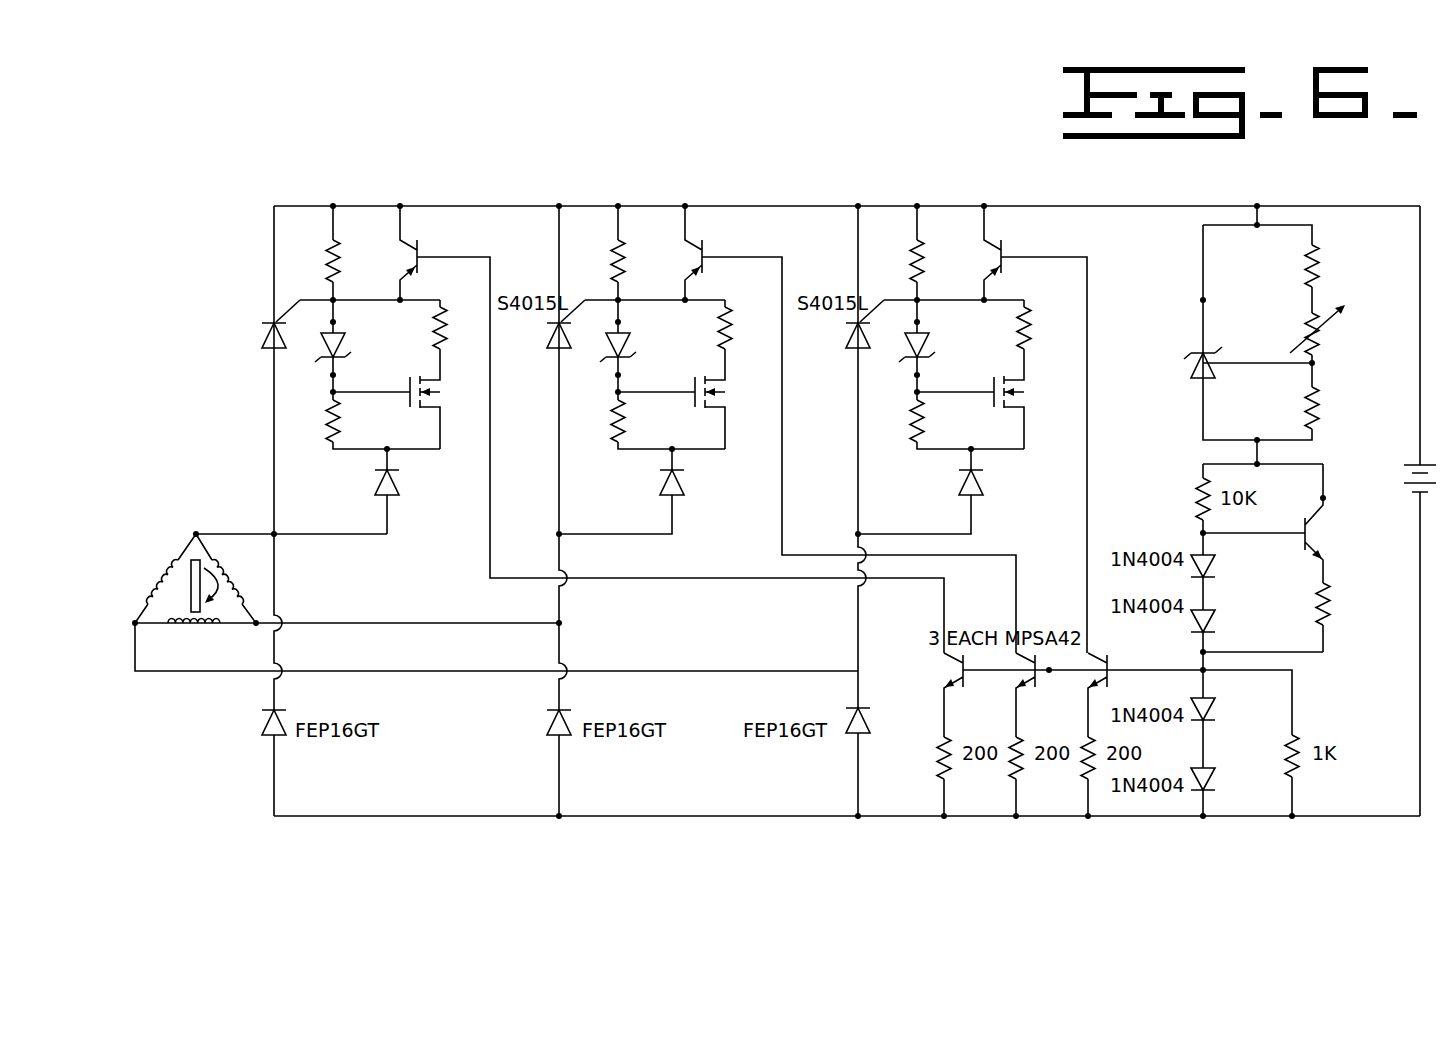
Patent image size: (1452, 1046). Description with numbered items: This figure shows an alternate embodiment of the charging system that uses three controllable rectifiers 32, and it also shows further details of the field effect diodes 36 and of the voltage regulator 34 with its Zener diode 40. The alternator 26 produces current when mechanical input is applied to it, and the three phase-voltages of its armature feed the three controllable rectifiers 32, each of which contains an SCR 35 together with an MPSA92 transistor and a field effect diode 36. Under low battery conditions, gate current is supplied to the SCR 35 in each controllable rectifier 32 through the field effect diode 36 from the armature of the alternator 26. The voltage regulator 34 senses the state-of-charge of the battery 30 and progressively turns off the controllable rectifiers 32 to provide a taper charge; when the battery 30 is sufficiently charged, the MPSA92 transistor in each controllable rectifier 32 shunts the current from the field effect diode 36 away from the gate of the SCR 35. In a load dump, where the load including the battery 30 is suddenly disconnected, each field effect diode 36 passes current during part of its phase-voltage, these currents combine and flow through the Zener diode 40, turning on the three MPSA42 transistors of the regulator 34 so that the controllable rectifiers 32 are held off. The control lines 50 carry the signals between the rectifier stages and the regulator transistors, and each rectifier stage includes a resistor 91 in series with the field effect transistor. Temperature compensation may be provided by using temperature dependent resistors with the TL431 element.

The alternator 26 is at (181, 524).
The battery 30 is at (1403, 446).
The controllable rectifier 32 is at (421, 183).
The voltage regulator 34 is at (1105, 830).
The SCR 35 is at (270, 343).
The field effect diode 36 is at (361, 471).
The Zener diode 40 is at (1333, 449).
The control line 50 is at (490, 452).
The resistor 91 is at (749, 324).